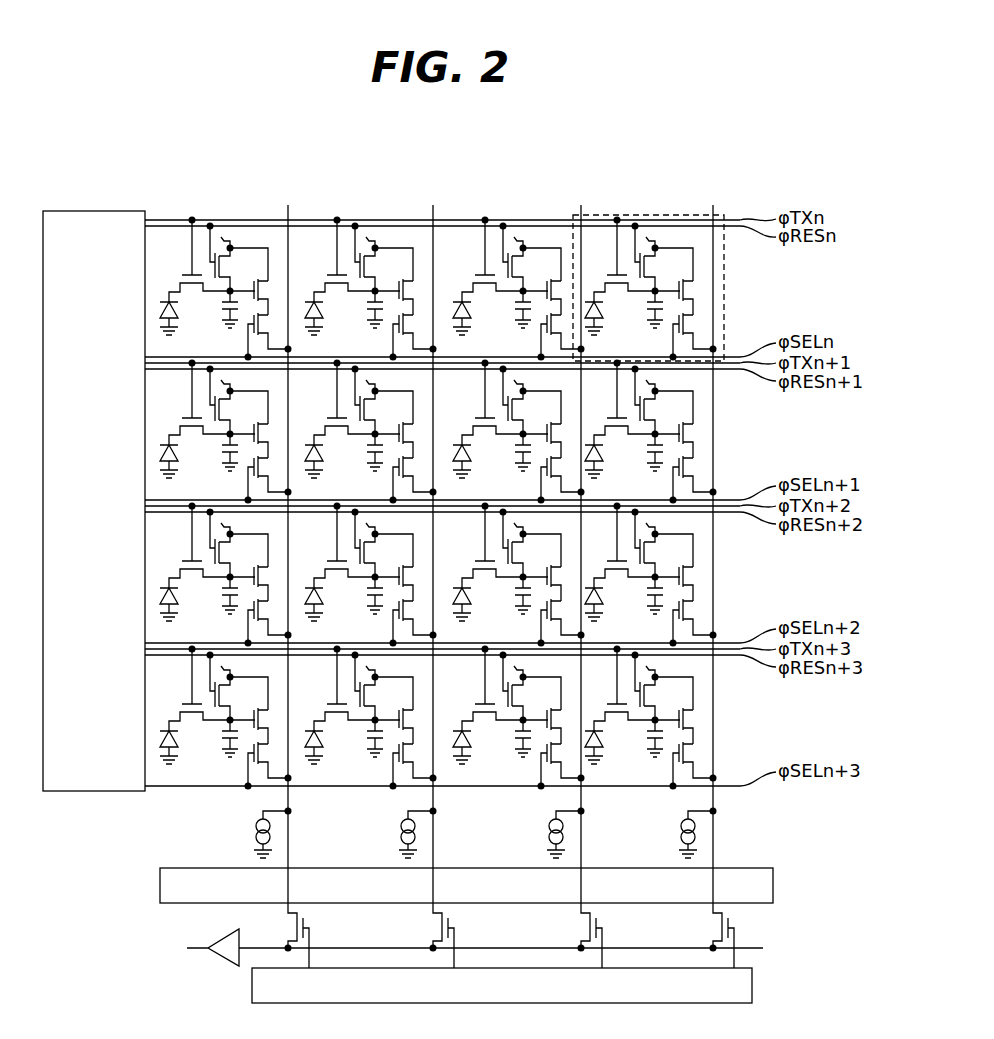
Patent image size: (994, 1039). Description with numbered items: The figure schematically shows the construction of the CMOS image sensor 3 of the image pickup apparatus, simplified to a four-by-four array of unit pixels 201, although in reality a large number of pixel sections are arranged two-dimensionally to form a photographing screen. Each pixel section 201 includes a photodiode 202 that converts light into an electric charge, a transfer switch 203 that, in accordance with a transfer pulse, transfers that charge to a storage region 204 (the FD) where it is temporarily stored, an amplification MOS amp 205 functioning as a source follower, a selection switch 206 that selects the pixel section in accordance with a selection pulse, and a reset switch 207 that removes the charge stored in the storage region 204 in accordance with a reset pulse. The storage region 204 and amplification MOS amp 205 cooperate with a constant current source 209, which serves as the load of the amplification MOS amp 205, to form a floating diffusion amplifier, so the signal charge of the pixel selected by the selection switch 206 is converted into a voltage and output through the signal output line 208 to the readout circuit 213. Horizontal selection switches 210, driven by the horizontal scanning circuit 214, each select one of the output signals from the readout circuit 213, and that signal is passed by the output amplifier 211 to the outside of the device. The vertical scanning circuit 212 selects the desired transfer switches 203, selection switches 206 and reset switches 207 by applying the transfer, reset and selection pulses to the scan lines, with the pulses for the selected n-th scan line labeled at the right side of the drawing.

The CMOS image sensor 3 is at (732, 146).
The unit pixel 201 is at (668, 246).
The photodiode 202 is at (583, 300).
The transfer switch 203 is at (609, 275).
The storage region 204 is at (647, 313).
The amplification MOS amp 205 is at (686, 290).
The selection switch 206 is at (686, 327).
The reset switch 207 is at (641, 262).
The signal output line 208 is at (715, 407).
The constant current source 209 is at (681, 829).
The horizontal selection switch 210 is at (736, 925).
The output amplifier 211 is at (222, 957).
The vertical scanning circuit 212 is at (100, 211).
The readout circuit 213 is at (775, 870).
The horizontal scanning circuit 214 is at (755, 970).